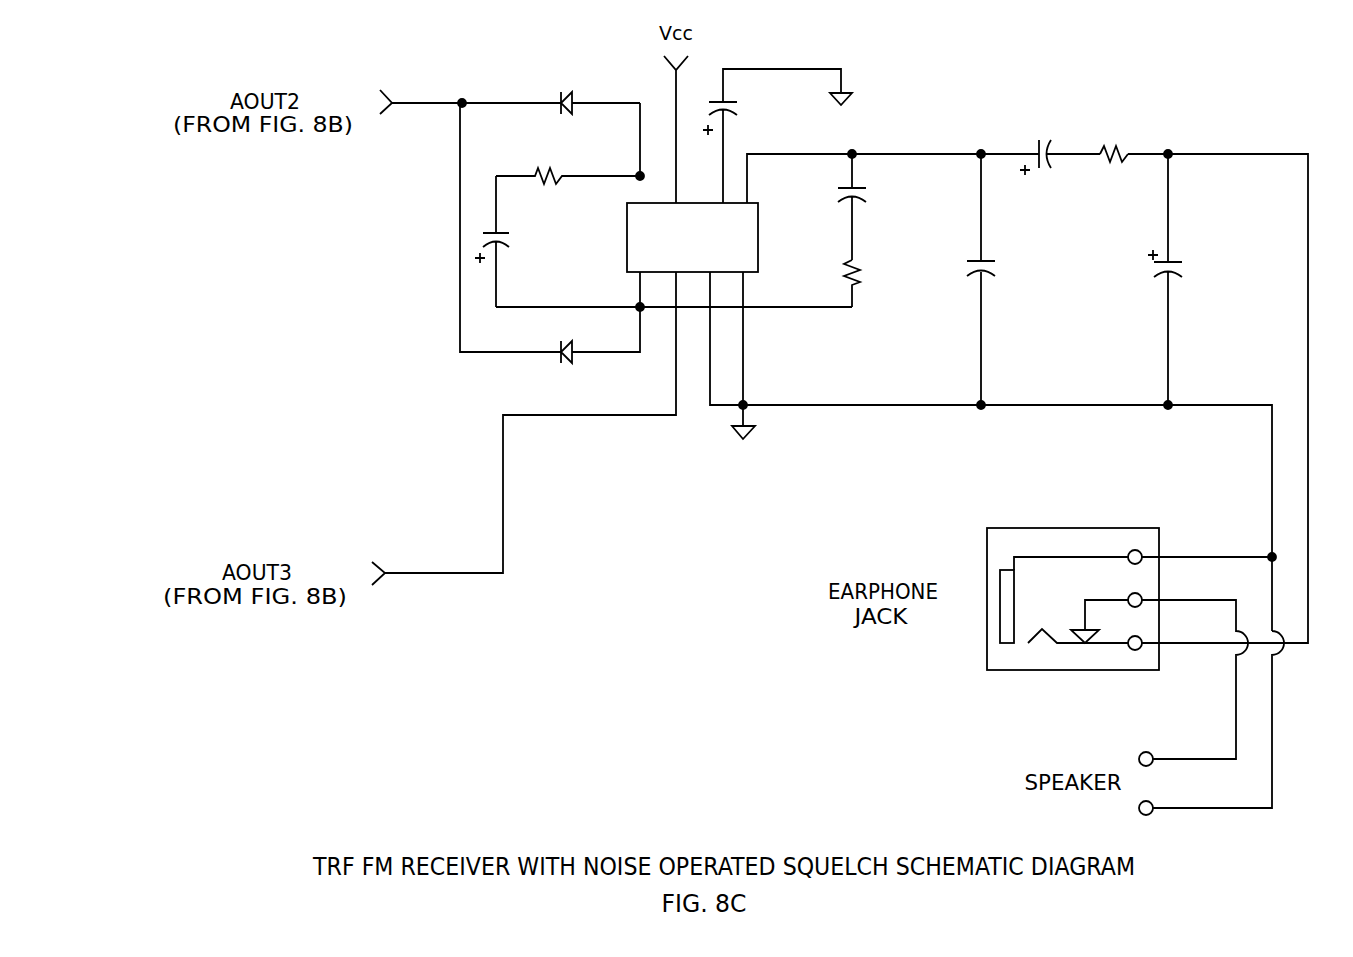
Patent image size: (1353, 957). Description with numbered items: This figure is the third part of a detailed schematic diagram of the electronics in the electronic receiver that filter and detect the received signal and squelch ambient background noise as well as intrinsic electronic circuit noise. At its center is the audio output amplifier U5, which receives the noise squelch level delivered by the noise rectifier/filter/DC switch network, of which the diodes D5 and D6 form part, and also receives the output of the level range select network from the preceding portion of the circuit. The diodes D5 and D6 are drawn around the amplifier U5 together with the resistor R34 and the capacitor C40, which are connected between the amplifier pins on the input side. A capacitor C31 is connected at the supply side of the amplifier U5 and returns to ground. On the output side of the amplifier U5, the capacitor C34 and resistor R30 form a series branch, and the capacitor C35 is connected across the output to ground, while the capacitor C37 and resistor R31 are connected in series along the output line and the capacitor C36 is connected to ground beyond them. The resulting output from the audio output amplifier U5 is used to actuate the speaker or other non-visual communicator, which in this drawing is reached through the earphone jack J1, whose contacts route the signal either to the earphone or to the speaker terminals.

The diode D5 is at (589, 102).
The diode D6 is at (571, 352).
The resistor 1K R34 is at (568, 179).
The capacitor 10uF C40 is at (521, 241).
The audio output amplifier U5 is at (694, 239).
The capacitor 4.7uF 10V C31 is at (777, 136).
The capacitor 2200pF C34 is at (893, 207).
The resistor 15K R30 is at (877, 278).
The capacitor 0.027 C35 is at (1013, 279).
The capacitor 100uF 10V C37 is at (1055, 169).
The resistor 3.3 R31 is at (1119, 158).
The capacitor 22uF 16V C36 is at (1193, 279).
The earphone jack J1 is at (1129, 613).